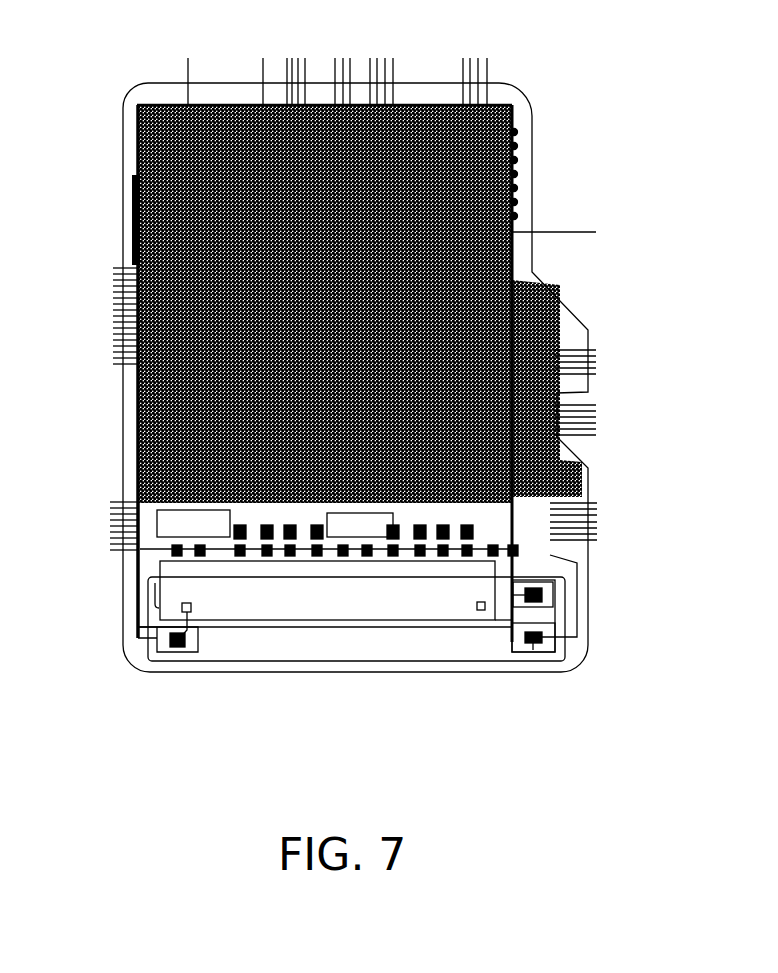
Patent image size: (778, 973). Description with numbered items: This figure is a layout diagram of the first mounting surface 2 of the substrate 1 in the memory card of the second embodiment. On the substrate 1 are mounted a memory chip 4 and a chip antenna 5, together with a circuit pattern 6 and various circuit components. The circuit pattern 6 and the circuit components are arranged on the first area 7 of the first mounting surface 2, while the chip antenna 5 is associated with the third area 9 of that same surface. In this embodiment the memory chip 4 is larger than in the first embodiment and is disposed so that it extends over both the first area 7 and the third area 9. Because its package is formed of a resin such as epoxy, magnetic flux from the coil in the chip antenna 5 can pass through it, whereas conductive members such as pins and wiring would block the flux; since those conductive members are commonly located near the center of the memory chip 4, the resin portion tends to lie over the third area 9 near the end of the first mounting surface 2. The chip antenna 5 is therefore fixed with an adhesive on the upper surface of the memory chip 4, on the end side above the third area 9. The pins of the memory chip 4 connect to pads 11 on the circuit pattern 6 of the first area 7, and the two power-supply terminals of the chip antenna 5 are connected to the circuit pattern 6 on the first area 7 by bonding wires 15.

The substrate 1 is at (352, 395).
The first mounting surface 2 is at (130, 120).
The memory chip 4 is at (130, 236).
The chip antenna 5 is at (309, 605).
The circuit pattern 6 is at (130, 213).
The first area 7 is at (353, 350).
The third area 9 is at (404, 644).
The pads 11 is at (191, 608).
The bonding wires 15 is at (186, 612).